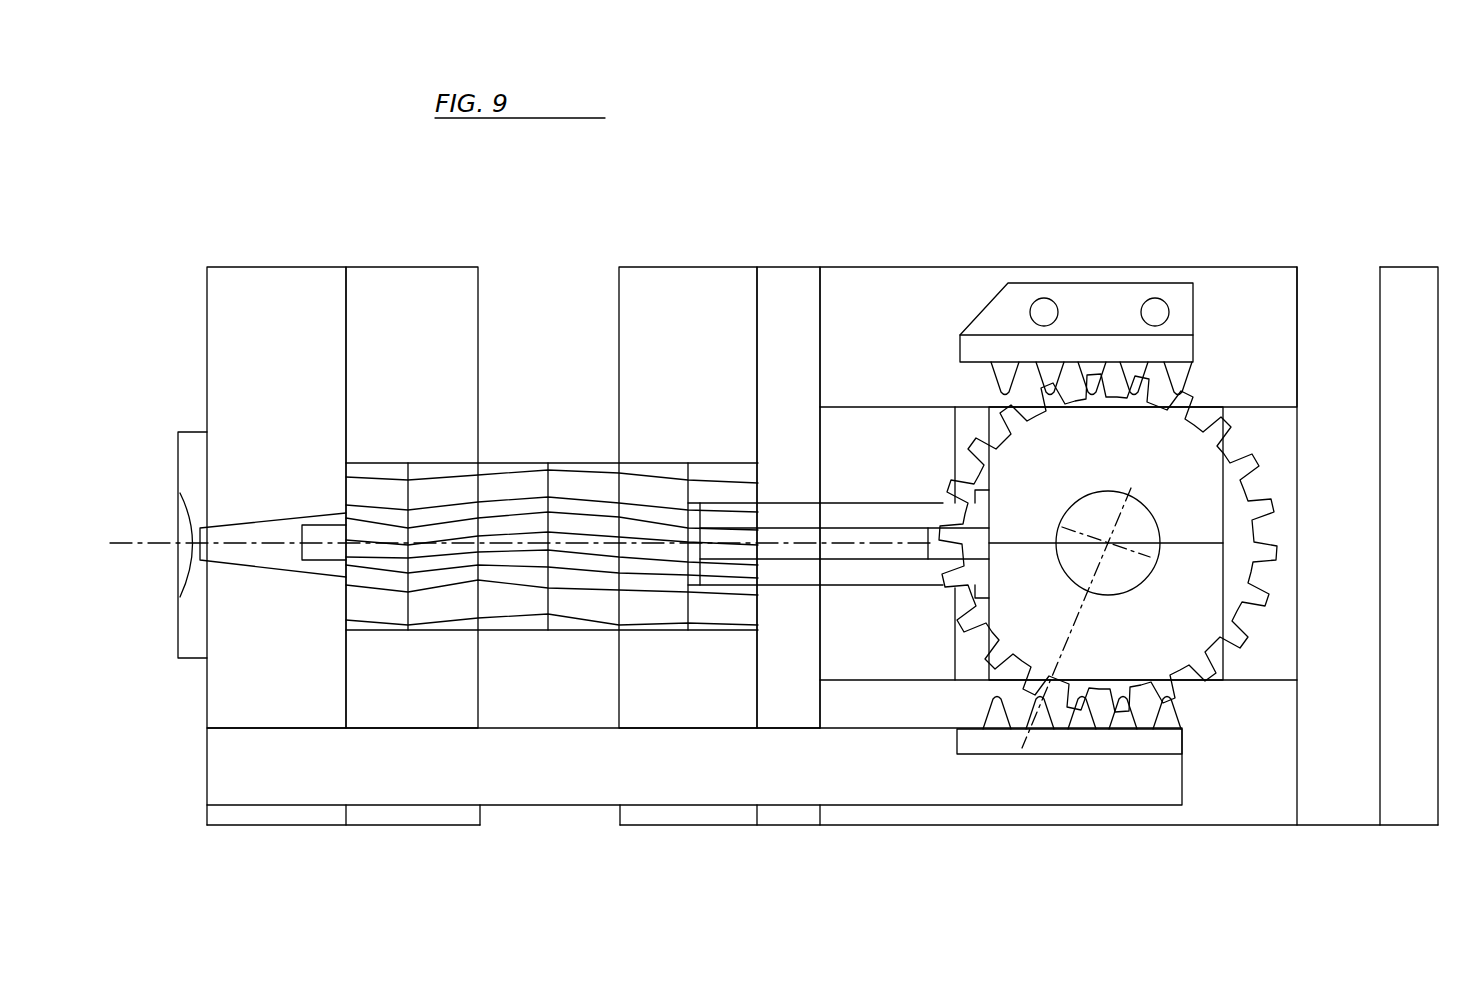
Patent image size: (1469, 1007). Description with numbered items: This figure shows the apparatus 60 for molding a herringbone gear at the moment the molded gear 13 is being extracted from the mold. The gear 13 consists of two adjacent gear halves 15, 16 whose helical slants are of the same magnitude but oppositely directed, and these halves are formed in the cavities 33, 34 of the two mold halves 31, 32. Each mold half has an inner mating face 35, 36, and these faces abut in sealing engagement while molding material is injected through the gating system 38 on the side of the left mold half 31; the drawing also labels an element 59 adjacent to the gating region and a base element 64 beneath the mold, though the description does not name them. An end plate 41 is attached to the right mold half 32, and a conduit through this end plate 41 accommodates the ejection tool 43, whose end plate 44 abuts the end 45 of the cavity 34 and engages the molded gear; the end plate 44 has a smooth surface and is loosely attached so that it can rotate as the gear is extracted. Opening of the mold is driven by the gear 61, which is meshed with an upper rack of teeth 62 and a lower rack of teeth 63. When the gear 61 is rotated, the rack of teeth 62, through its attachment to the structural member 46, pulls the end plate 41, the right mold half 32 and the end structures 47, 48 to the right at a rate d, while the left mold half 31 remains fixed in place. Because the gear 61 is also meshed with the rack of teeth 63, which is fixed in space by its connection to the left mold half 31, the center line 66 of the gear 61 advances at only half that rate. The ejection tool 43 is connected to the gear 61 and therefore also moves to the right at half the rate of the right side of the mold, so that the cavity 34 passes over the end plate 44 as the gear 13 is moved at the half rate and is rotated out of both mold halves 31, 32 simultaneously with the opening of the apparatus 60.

The gear 13 is at (552, 502).
The gear half 15 is at (502, 465).
The gear half 16 is at (585, 465).
The mold half 31 is at (401, 265).
The mold half 32 is at (735, 267).
The cavity 33 is at (450, 487).
The cavity 34 is at (665, 495).
The inner mating face 35 is at (478, 318).
The inner mating face 36 is at (619, 336).
The gating system 38 is at (181, 545).
The end plate 41 is at (805, 267).
The ejection tool 43 is at (785, 495).
The end plate 44 is at (688, 568).
The end 45 is at (705, 475).
The structural member 46 is at (950, 266).
The end structure 47 is at (1320, 267).
The end structure 48 is at (1412, 267).
The drive pin 59 is at (248, 560).
The apparatus 60 is at (1240, 190).
The gear 61 is at (1283, 505).
The rack of teeth 62 is at (965, 370).
The rack of teeth 63 is at (973, 728).
The base 64 is at (703, 770).
The center line 66 is at (1090, 527).